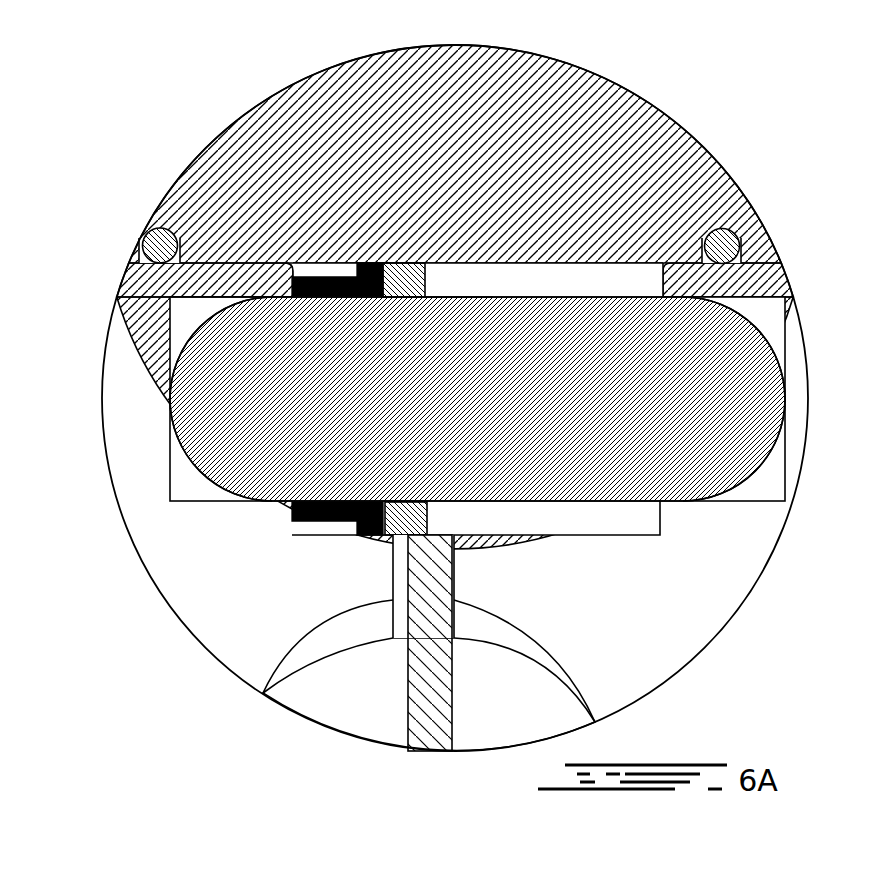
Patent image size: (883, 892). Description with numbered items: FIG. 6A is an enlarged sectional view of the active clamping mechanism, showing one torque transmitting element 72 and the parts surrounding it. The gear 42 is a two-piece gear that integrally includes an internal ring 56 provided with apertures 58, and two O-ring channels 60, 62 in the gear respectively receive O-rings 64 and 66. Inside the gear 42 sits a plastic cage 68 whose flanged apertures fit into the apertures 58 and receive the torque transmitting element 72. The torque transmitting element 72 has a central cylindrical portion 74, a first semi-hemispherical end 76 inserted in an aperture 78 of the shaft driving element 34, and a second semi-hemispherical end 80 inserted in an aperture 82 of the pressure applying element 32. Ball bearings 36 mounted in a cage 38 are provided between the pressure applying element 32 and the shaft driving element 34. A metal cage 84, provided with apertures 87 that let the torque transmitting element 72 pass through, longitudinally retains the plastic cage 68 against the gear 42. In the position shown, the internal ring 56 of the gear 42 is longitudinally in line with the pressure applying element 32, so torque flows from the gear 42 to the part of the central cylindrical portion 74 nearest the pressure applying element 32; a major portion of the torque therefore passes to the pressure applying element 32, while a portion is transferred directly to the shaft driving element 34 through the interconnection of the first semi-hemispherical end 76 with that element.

The pressure applying element 32 is at (200, 613).
The shaft driving element 34 is at (697, 620).
The ball bearings 36 is at (342, 695).
The cage 38 is at (428, 717).
The gear 42 is at (706, 130).
The internal ring 56 is at (320, 270).
The apertures 58 is at (287, 293).
The O-ring channel 60 is at (780, 240).
The O-ring channel 62 is at (134, 255).
The O-ring 64 is at (738, 214).
The O-ring 66 is at (147, 236).
The plastic cage 68 is at (360, 268).
The torque transmitting element 72 is at (552, 318).
The central cylindrical portion 74 is at (477, 399).
The first semi-hemispherical end 76 is at (755, 400).
The aperture 78 is at (770, 313).
The second semi-hemispherical end 80 is at (197, 392).
The aperture 82 is at (187, 322).
The metal cage 84 is at (420, 263).
The apertures 87 is at (417, 298).